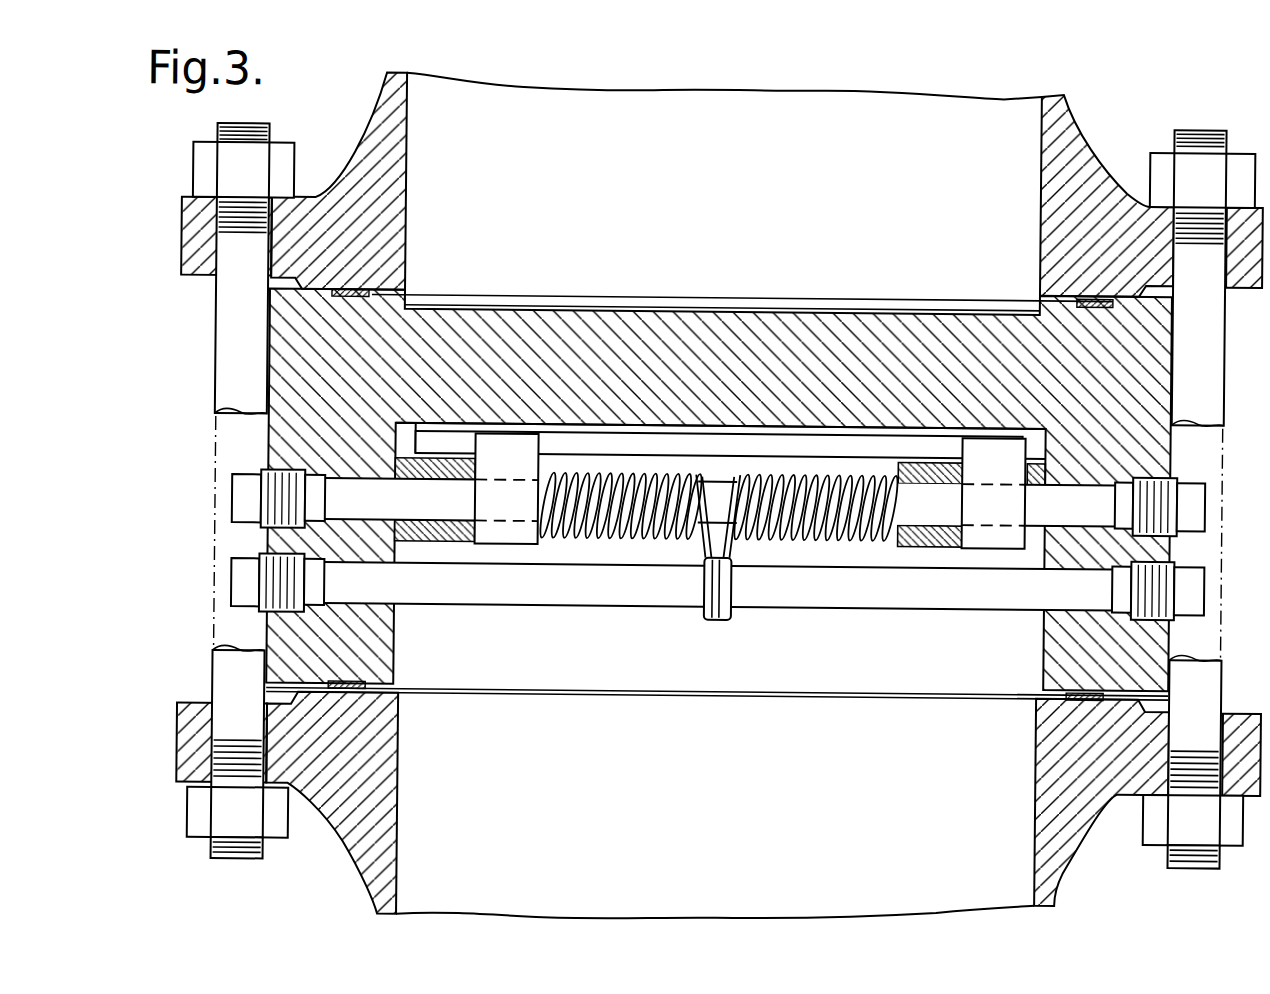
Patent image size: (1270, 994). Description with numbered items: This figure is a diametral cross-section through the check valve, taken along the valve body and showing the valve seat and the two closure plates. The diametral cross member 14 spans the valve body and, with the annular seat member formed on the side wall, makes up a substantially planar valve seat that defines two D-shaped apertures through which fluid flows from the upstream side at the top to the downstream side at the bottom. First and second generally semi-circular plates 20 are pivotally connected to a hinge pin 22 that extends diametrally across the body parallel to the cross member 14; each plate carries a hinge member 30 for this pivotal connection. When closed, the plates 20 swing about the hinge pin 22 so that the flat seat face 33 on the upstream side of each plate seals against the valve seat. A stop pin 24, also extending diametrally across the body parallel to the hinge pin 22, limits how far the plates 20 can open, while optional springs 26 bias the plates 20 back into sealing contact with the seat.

The diametral cross member 14 is at (637, 322).
The semi-circular plate 20 is at (447, 442).
The flat seat face 33 is at (668, 425).
The hinge pin 22 is at (360, 500).
The hinge member 30 is at (462, 545).
The spring 26 is at (617, 507).
The stop pin 24 is at (688, 592).